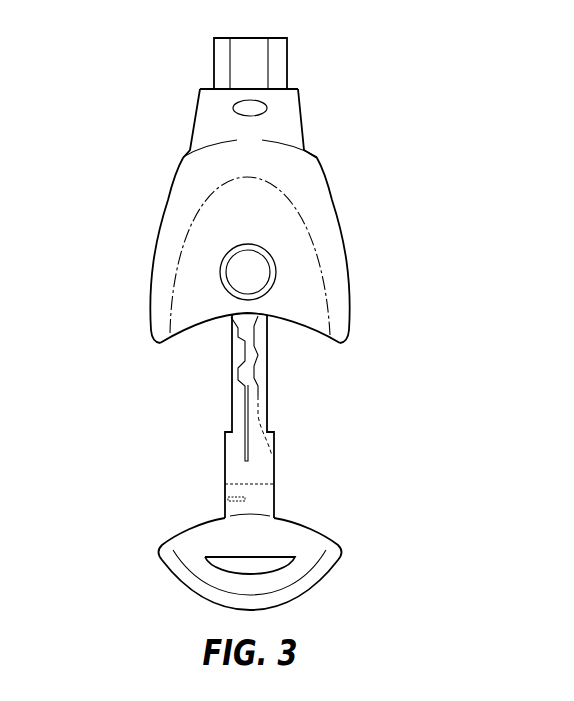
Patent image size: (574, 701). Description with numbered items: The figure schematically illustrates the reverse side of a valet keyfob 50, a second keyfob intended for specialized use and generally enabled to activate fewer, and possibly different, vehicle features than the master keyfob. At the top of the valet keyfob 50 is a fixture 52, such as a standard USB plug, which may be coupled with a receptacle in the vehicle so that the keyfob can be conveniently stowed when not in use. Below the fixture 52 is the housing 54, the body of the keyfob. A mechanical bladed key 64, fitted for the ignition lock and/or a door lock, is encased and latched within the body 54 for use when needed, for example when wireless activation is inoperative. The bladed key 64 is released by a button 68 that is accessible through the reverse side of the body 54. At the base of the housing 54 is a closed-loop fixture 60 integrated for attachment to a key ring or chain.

The valet keyfob 50 is at (146, 64).
The fixture 52 is at (287, 75).
The housing 54 is at (165, 242).
The button 68 is at (265, 275).
The mechanical bladed key 64 is at (258, 475).
The closed-loop fixture 60 is at (323, 567).